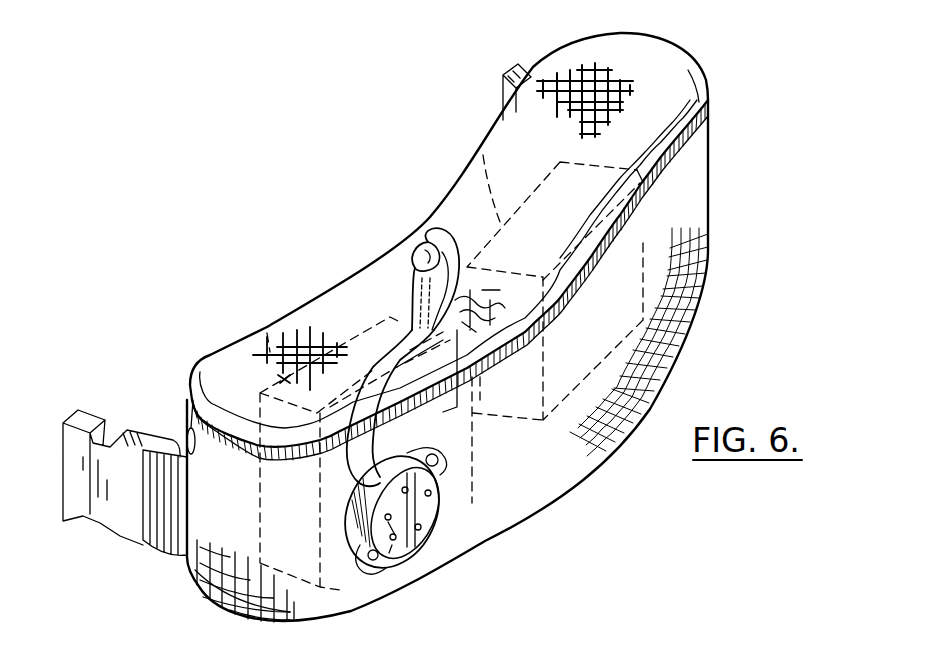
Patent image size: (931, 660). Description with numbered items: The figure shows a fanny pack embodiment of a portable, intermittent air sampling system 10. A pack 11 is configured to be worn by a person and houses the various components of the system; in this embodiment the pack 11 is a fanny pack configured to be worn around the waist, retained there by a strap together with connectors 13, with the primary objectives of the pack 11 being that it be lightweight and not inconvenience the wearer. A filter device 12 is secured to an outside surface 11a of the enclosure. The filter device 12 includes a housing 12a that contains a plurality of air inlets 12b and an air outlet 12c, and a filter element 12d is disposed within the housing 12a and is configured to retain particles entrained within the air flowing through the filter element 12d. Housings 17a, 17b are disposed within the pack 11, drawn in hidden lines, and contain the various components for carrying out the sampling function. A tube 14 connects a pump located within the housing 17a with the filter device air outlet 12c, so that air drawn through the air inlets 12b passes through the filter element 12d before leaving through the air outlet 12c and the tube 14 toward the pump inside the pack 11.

The portable, intermittent air sampling system 10 is at (748, 104).
The pack 11 is at (700, 183).
The outside surface 11a is at (549, 486).
The filter device 12 is at (447, 444).
The housing 12a is at (395, 538).
The air inlets 12b is at (430, 498).
The air outlet 12c is at (355, 508).
The filter element 12d is at (406, 555).
The connectors 13 is at (513, 71).
The tube 14 is at (403, 243).
The housing 17a is at (483, 155).
The housing 17b is at (262, 330).